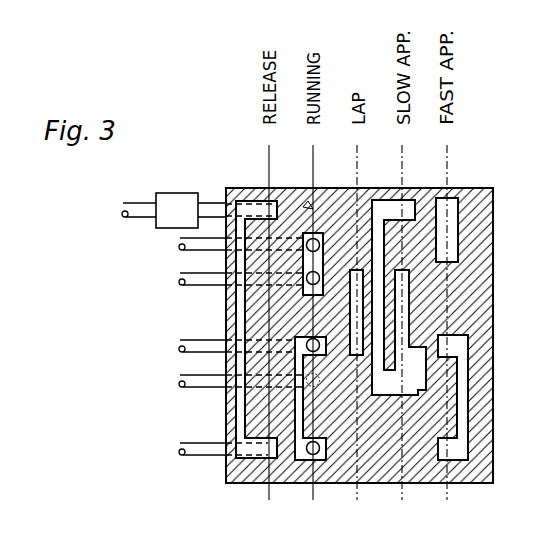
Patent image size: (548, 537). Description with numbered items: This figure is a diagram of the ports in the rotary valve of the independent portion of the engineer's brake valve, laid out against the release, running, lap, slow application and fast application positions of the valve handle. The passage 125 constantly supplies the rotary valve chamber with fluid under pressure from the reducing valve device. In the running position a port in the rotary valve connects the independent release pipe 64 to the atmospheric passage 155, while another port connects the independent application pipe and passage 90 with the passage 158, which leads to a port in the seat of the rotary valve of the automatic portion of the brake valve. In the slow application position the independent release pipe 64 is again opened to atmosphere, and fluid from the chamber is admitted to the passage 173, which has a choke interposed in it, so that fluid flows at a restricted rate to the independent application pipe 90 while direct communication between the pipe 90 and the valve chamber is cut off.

The passage 125 is at (122, 209).
The independent application pipe and passage 90 is at (180, 246).
The passage 158 is at (180, 279).
The atmospheric passage 155 is at (180, 346).
The passage 173 is at (180, 381).
The independent release pipe 64 is at (180, 449).